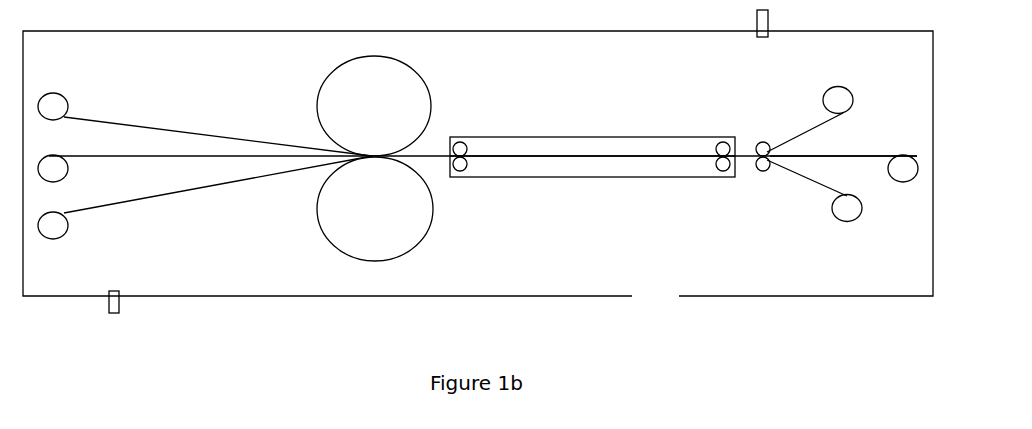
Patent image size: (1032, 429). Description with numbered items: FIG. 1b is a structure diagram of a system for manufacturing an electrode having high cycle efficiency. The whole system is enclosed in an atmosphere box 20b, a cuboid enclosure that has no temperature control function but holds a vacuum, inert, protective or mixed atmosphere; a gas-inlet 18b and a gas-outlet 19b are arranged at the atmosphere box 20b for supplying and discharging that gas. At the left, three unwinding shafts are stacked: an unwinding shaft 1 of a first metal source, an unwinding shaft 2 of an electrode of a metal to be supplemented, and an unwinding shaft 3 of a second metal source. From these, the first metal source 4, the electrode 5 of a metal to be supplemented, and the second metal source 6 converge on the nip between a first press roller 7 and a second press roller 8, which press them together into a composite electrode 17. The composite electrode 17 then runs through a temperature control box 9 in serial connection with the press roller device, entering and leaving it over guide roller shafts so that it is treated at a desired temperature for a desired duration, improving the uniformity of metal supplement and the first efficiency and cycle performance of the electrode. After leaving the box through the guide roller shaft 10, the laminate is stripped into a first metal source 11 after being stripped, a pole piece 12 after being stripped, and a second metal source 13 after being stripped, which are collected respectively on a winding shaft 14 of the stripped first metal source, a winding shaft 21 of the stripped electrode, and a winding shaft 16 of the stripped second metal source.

The unwinding shaft of a first metal source 1 is at (53, 90).
The unwinding shaft of an electrode of a metal to be supplemented 2 is at (49, 158).
The unwinding shaft of a second metal source 3 is at (52, 232).
The first metal source 4 is at (218, 126).
The electrode of a metal to be supplemented 5 is at (483, 148).
The second metal source 6 is at (218, 184).
The first press roller 7 is at (374, 106).
The second press roller 8 is at (375, 209).
The temperature control box 9 is at (592, 142).
The guide roller shaft 10 is at (759, 169).
The first metal source after being stripped 11 is at (805, 124).
The pole piece after being stripped 12 is at (843, 145).
The second metal source after being stripped 13 is at (807, 191).
The winding shaft of the first metal source after being stripped 14 is at (844, 106).
The winding shaft of the second metal source after being stripped 16 is at (854, 212).
The composite electrode 17 is at (592, 159).
The gas-inlet 18b is at (784, 23).
The gas-outlet 19b is at (131, 309).
The atmosphere box 20b is at (478, 169).
The winding shaft of the electrode of a metal to be supplemented after being strippe 21 is at (905, 157).